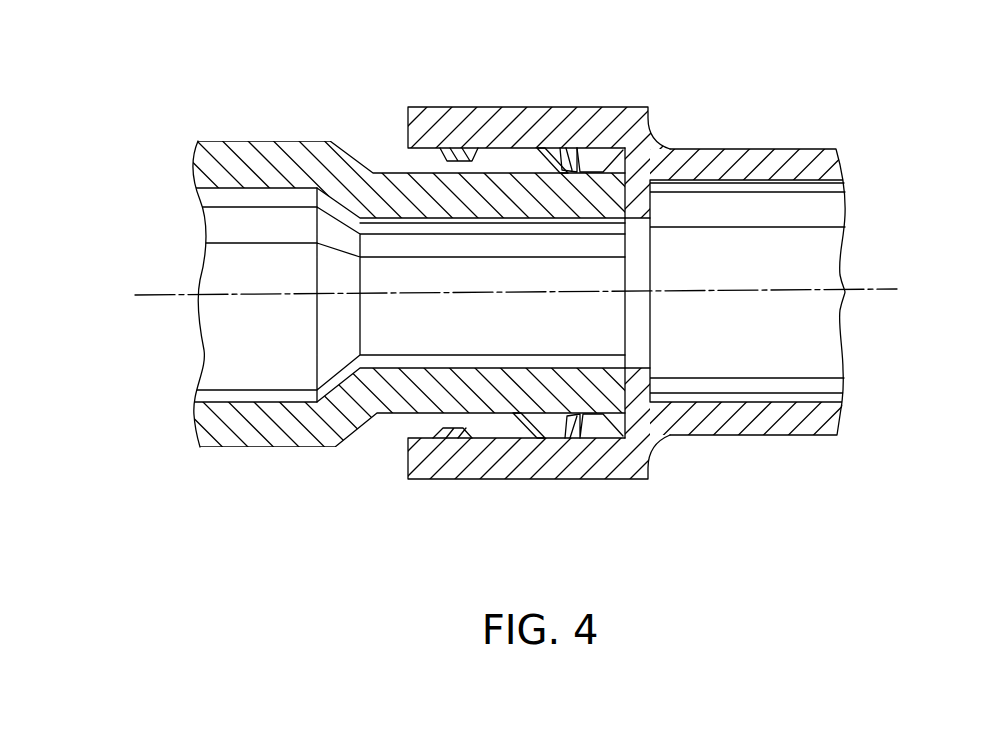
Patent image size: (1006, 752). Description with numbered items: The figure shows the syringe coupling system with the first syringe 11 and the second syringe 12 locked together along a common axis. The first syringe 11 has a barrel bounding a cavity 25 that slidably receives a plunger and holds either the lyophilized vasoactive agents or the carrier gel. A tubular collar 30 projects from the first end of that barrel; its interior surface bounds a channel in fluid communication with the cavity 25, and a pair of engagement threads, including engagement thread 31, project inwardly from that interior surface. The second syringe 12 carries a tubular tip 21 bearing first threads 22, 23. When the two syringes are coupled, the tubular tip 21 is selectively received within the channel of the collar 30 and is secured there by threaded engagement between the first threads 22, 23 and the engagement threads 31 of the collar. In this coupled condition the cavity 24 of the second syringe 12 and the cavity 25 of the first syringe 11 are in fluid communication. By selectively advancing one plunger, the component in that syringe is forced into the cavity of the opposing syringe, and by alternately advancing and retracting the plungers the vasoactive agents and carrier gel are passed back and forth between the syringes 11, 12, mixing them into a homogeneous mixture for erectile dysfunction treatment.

The first syringe 11 is at (853, 51).
The second syringe 12 is at (291, 151).
The tubular tip 21 is at (393, 171).
The first thread 22 is at (605, 146).
The first thread 23 is at (596, 148).
The cavity 24 is at (257, 348).
The cavity 25 is at (806, 336).
The tubular collar 30 is at (489, 480).
The engagement thread 31 is at (567, 479).